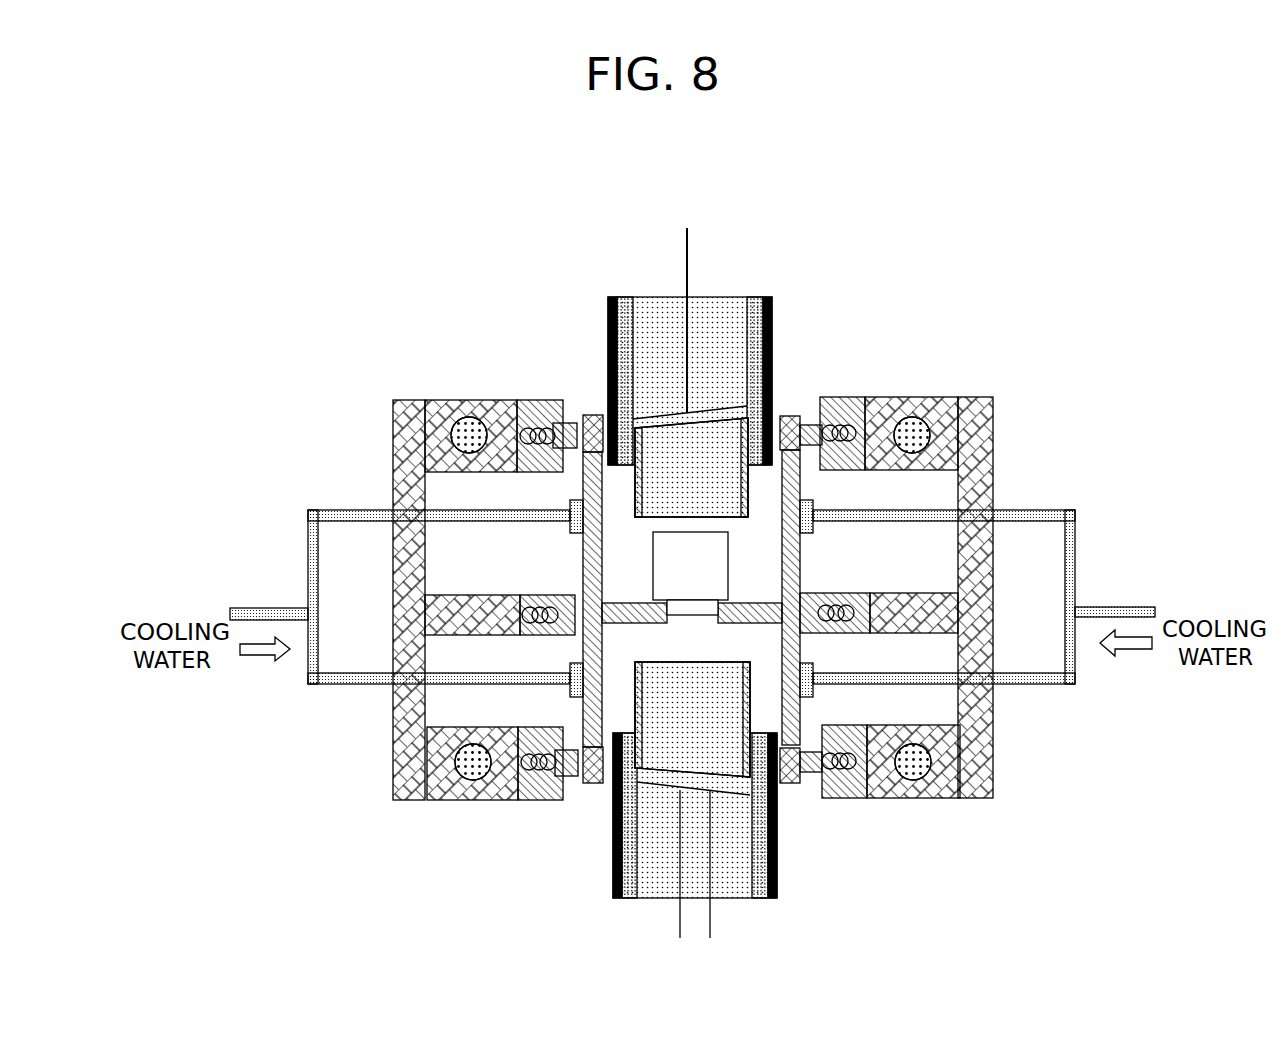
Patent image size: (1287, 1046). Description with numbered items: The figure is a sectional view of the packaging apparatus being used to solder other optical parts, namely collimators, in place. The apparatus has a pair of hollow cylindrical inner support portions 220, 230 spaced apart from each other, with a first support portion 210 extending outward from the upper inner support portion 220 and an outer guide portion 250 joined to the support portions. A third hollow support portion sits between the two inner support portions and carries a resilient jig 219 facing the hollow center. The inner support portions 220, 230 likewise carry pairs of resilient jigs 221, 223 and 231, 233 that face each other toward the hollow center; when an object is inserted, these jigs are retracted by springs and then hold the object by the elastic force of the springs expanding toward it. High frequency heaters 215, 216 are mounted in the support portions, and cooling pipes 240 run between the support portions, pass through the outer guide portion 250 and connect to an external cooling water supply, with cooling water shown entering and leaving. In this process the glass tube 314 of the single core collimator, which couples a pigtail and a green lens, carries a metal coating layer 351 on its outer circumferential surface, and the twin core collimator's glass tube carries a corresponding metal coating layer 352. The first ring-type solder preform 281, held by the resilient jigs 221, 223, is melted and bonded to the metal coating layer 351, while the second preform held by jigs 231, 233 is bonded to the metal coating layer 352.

The first support portion 210 is at (440, 400).
The high frequency heater 215 is at (470, 417).
The high frequency heater 216 is at (477, 778).
The resilient jig 219 is at (803, 607).
The inner support portion 220 is at (535, 400).
The resilient jig 221 is at (576, 405).
The resilient jig 223 is at (843, 397).
The inner support portion 230 is at (537, 800).
The resilient jig 231 is at (580, 797).
The resilient jig 233 is at (810, 797).
The cooling pipe 240 is at (328, 563).
The outer guide portion 250 is at (407, 803).
The first ring-type solder preform 281 is at (790, 412).
The glass tube 314 is at (628, 307).
The metal coating layer 351 is at (607, 323).
The metal coating layer 352 is at (613, 893).